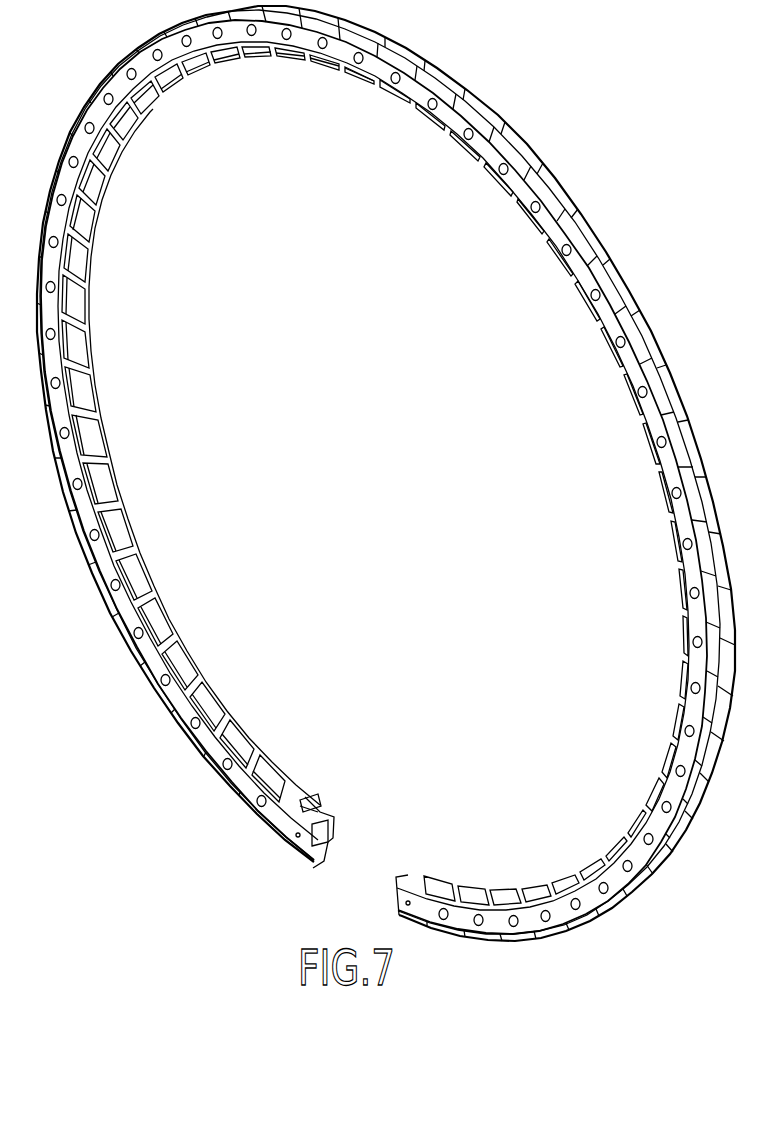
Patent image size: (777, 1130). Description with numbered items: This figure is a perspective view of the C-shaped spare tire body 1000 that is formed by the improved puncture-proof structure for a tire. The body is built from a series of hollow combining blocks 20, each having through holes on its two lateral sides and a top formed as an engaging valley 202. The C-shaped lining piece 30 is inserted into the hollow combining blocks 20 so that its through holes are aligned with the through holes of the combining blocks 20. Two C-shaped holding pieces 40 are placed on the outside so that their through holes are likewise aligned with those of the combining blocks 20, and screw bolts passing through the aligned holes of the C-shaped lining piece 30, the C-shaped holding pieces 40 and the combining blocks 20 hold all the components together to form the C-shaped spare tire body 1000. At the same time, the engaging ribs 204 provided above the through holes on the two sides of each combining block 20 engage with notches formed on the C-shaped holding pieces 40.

The C-shaped spare tire body 1000 is at (386, 473).
The combining block 20 is at (350, 796).
The engaging valley 202 is at (328, 812).
The engaging rib 204 is at (292, 800).
The C-shaped lining piece 30 is at (228, 733).
The C-shaped holding piece 40 is at (333, 824).